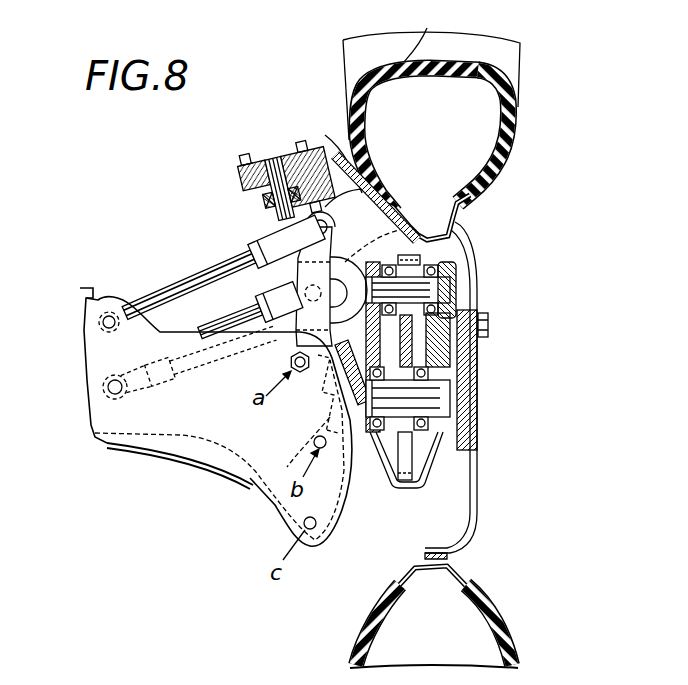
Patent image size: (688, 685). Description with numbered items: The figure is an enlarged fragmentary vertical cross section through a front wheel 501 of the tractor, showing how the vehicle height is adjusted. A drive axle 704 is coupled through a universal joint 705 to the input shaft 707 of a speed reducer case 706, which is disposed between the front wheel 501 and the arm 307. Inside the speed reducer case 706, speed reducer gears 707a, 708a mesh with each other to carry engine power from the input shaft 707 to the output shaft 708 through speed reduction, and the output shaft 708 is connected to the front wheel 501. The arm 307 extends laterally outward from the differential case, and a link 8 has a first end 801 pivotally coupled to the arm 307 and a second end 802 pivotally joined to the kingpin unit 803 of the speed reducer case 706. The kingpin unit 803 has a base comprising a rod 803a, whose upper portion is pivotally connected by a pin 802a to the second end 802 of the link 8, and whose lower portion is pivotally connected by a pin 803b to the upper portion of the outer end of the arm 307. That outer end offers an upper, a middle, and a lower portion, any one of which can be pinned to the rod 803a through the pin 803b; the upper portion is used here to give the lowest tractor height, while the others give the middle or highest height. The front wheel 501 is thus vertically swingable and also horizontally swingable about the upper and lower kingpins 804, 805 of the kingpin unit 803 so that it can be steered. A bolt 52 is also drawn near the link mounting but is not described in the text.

The front wheel 501 is at (515, 142).
The universal joint 705 is at (395, 220).
The input shaft 707 is at (430, 290).
The speed reducer gear 707a is at (446, 262).
The kingpin unit 803 is at (340, 334).
The output shaft 708 is at (435, 393).
The speed reducer case 706 is at (396, 488).
The speed reducer gear 708a is at (412, 470).
The second end of link 802 is at (340, 162).
The bolt 52 is at (297, 148).
The upper kingpin 804 is at (275, 200).
The pin 802a is at (380, 182).
The link 8 is at (200, 276).
The drive axle 704 is at (231, 327).
The arm 307 is at (188, 432).
The first end of link 801 is at (110, 312).
The rod 803a is at (287, 334).
The pin 803b is at (300, 378).
The lower kingpin 805 is at (293, 448).